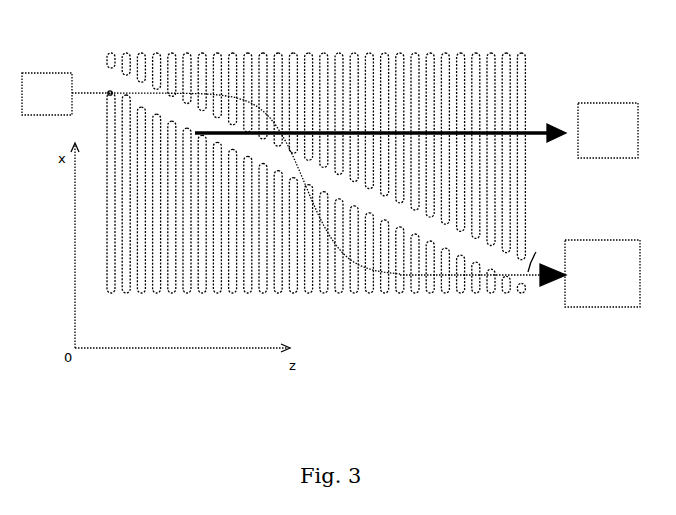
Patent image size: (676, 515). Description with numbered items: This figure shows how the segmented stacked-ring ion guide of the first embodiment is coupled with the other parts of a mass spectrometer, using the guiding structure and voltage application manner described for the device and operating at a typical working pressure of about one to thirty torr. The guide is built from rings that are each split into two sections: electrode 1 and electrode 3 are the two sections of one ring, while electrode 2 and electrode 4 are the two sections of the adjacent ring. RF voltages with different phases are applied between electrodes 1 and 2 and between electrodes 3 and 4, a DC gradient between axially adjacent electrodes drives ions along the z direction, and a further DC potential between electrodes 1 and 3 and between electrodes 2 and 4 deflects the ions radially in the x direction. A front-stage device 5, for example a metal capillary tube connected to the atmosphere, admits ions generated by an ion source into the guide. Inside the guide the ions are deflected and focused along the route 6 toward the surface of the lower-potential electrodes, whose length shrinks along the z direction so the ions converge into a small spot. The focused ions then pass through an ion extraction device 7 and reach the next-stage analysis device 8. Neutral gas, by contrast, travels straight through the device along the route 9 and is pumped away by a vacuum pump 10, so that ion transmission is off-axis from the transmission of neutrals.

The electrode 1 is at (110, 51).
The electrode 2 is at (126, 54).
The electrode 3 is at (110, 213).
The electrode 4 is at (126, 214).
The device 5 is at (67, 94).
The route 6 is at (254, 183).
The ion extraction device 7 is at (483, 262).
The analysis device 8 is at (602, 273).
The route 9 is at (380, 125).
The vacuum pump 10 is at (608, 130).